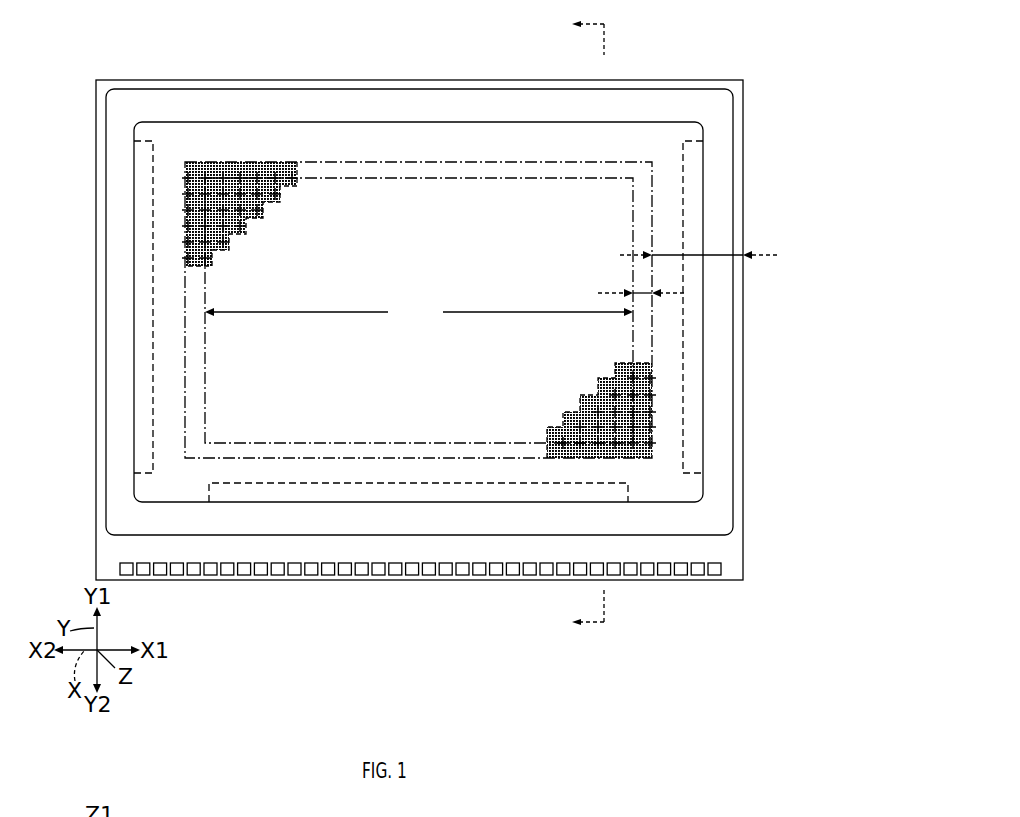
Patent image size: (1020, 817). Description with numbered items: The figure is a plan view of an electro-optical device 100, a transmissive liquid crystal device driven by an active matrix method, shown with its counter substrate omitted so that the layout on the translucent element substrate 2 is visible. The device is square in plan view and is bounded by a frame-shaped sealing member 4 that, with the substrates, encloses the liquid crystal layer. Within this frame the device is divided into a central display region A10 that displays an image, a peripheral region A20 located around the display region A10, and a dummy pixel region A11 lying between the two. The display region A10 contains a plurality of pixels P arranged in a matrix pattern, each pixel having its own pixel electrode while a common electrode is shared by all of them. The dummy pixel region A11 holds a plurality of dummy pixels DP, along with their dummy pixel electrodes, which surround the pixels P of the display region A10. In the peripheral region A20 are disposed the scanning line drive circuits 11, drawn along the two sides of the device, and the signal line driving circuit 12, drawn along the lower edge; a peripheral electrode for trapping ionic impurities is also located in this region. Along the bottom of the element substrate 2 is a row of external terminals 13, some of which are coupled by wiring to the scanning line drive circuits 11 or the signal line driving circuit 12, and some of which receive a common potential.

The electro-optical device 100 is at (747, 22).
The element substrate 2 is at (758, 96).
The sealing member 4 is at (727, 180).
The scanning line drive circuits 11 is at (154, 140).
The signal line driving circuit 12 is at (630, 487).
The external terminals 13 is at (392, 577).
The pixels P is at (257, 212).
The dummy pixels DP is at (296, 178).
The display region A10 is at (419, 311).
The dummy pixel region A11 is at (634, 283).
The peripheral region A20 is at (710, 243).